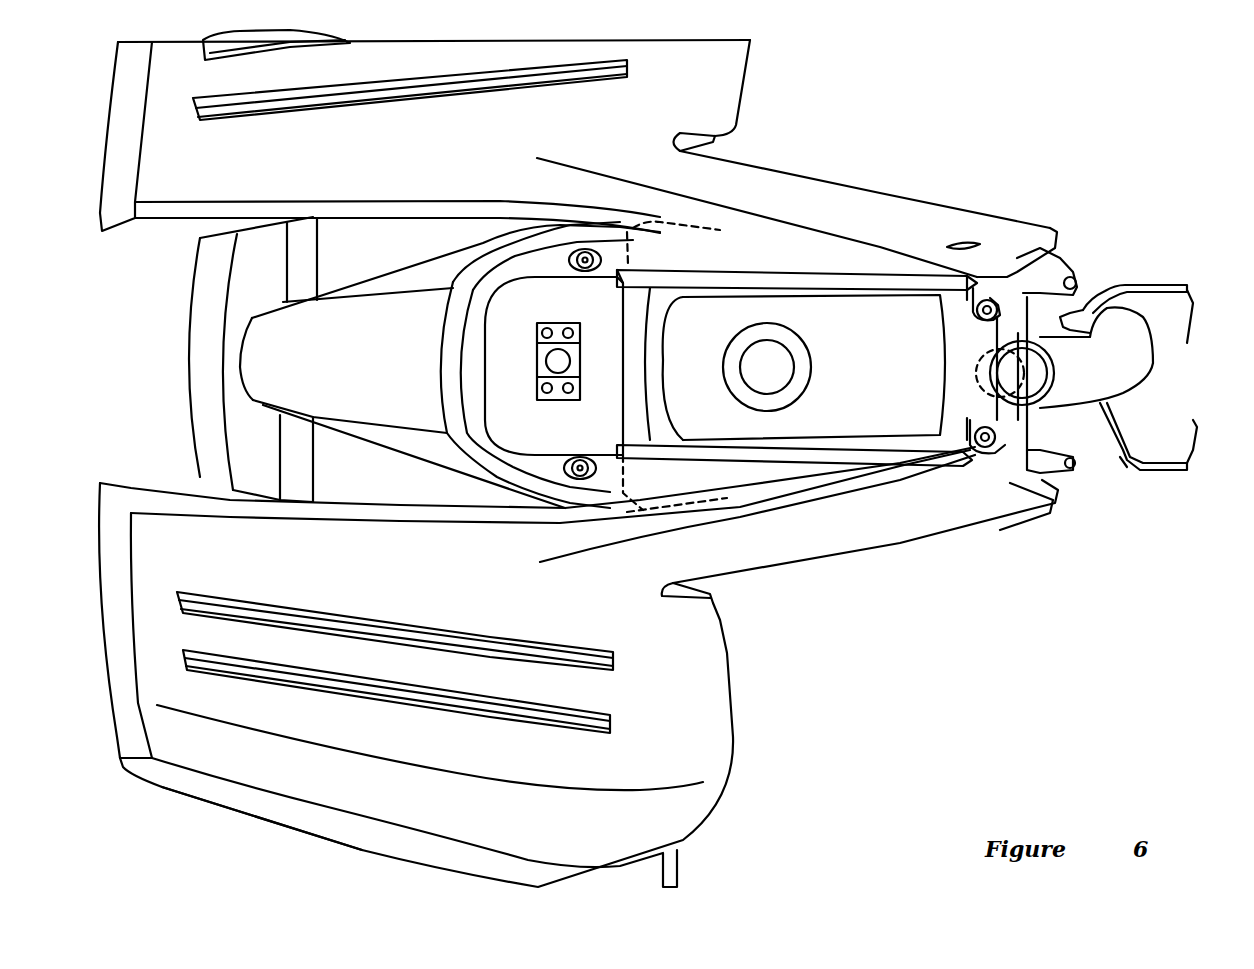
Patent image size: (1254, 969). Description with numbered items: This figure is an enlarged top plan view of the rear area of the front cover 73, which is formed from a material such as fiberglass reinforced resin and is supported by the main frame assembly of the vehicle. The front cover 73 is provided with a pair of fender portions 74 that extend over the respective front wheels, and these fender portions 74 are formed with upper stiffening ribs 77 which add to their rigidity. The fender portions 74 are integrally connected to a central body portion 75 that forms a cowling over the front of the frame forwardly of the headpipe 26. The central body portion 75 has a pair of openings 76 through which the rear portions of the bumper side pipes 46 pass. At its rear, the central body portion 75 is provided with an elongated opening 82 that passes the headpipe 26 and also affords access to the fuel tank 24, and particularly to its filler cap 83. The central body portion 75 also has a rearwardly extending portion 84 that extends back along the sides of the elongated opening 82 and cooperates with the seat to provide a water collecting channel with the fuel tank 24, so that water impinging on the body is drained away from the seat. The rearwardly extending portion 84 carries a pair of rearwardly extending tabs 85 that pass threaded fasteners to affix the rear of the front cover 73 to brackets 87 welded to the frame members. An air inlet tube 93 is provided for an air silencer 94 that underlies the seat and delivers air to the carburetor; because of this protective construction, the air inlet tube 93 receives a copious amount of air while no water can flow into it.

The fuel tank 24 is at (913, 435).
The headpipe 26 is at (580, 360).
The bumper side pipes 46 is at (578, 255).
The front cover 73 is at (337, 803).
The fender portions 74 is at (727, 80).
The central body portion 75 is at (372, 371).
The openings 76 is at (626, 227).
The upper stiffening ribs 77 is at (282, 42).
The elongated opening 82 is at (485, 427).
The filler cap 83 is at (790, 337).
The rearwardly extending portion 84 is at (897, 203).
The rearwardly extending tabs 85 is at (990, 307).
The brackets 87 is at (1013, 430).
The air inlet tube 93 is at (1120, 383).
The air silencer 94 is at (1157, 290).